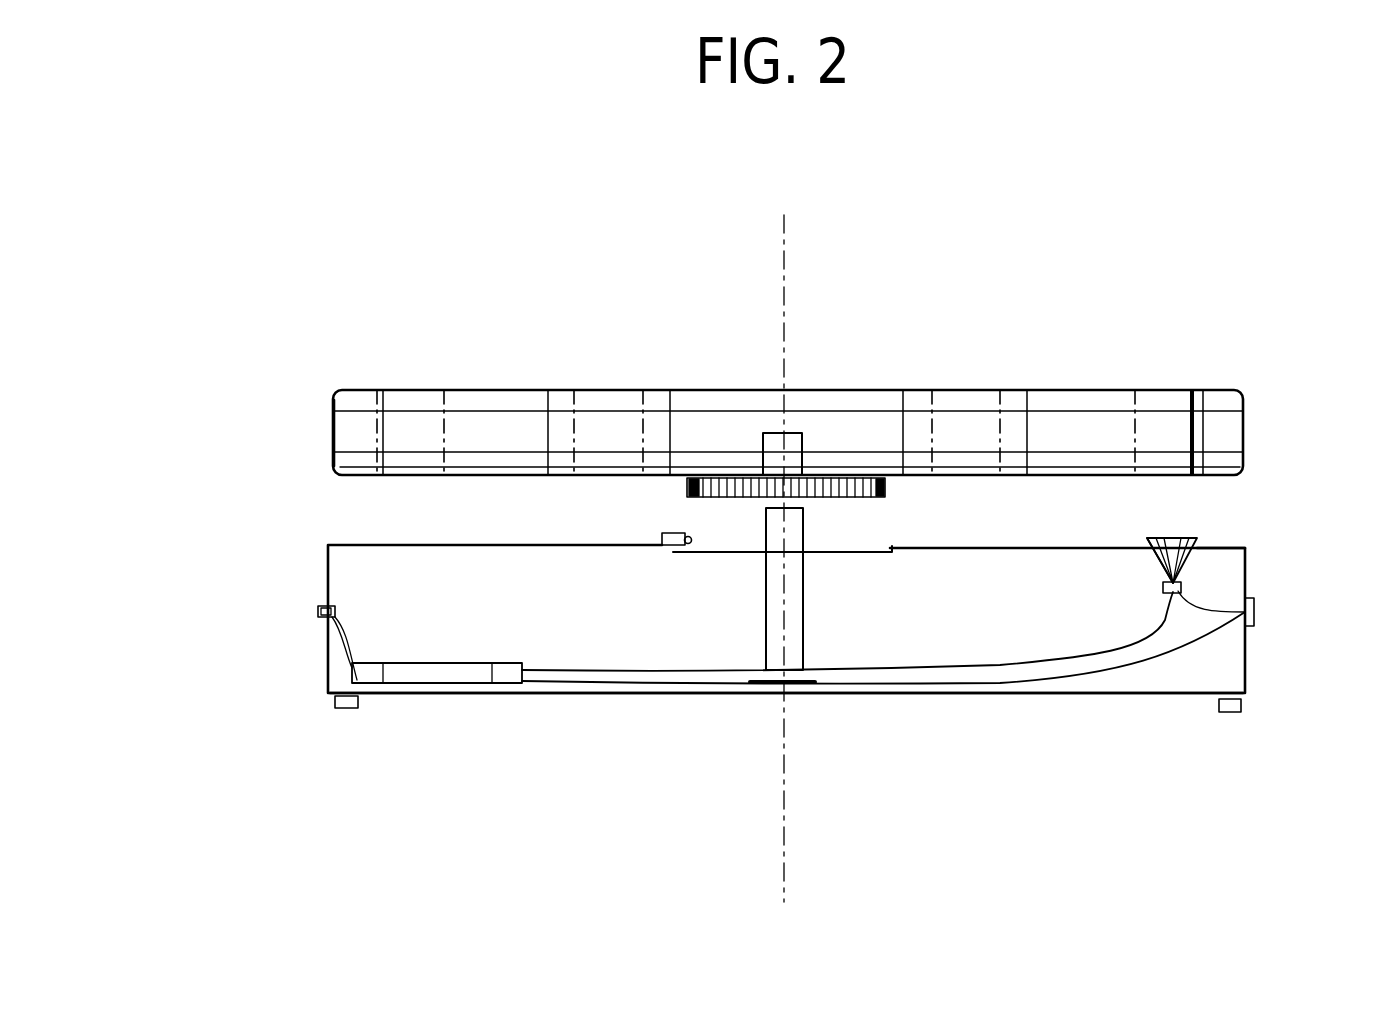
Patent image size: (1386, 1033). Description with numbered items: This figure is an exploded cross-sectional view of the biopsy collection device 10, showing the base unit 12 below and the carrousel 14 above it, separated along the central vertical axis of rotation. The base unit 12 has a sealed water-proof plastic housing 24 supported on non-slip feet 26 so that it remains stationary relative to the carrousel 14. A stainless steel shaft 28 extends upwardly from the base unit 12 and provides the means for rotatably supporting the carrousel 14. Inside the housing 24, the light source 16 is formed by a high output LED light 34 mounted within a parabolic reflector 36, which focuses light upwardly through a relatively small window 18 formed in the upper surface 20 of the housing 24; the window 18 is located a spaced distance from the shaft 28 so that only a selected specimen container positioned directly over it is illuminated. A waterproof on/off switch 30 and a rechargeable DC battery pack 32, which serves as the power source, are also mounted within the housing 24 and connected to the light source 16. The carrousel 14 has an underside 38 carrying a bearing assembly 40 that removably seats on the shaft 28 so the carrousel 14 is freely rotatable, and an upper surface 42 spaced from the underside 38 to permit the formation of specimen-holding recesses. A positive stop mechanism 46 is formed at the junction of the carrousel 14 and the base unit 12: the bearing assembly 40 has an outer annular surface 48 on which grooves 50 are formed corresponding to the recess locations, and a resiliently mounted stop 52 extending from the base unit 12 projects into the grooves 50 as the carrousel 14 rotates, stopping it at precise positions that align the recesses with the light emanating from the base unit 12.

The biopsy collection device 10 is at (282, 432).
The base unit 12 is at (1080, 703).
The carrousel 14 is at (1250, 413).
The light source 16 is at (1142, 590).
The window 18 is at (1190, 530).
The upper surface 20 is at (1232, 533).
The housing 24 is at (1159, 703).
The non-slip feet 26 is at (330, 713).
The shaft 28 is at (807, 610).
The on/off switch 30 is at (1264, 612).
The battery pack 32 is at (424, 655).
The LED light 34 is at (1194, 587).
The parabolic reflector 36 is at (1153, 563).
The underside 38 is at (330, 457).
The bearing assembly 40 is at (793, 462).
The upper surface 42 is at (1180, 388).
The positive stop mechanism 46 is at (670, 561).
The outer annular surface 48 is at (890, 491).
The grooves 50 is at (748, 488).
The resiliently mounted stop 52 is at (702, 536).